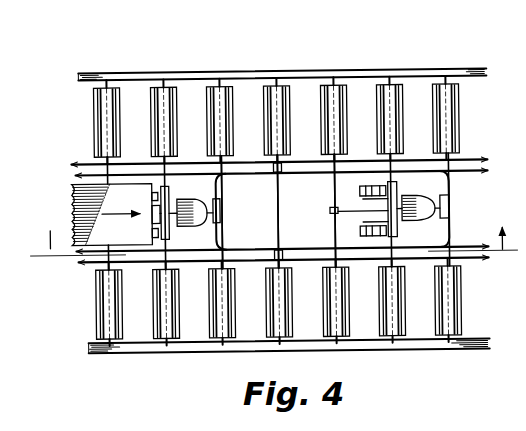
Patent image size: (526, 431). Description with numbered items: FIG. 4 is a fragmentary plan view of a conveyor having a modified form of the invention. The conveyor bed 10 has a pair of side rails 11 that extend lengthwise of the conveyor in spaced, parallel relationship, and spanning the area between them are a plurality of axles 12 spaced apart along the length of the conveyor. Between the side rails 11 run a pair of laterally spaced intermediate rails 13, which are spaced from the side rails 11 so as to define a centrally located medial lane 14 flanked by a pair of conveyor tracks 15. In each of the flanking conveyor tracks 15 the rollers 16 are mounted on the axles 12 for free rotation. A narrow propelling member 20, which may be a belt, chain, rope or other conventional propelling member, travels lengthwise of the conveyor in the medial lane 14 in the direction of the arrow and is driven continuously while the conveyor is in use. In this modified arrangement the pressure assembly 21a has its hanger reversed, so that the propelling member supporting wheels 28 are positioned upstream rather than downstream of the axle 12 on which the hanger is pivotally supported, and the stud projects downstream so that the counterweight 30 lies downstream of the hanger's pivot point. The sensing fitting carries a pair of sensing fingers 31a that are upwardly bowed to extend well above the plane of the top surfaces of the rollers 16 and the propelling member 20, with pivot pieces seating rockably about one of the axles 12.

The conveyor bed 10 is at (264, 220).
The side rails 11 is at (92, 75).
The axles 12 is at (277, 212).
The intermediate rails 13 is at (83, 162).
The medial lane 14 is at (230, 203).
The conveyor tracks 15 is at (92, 93).
The rollers 16 is at (463, 315).
The propelling member 20 is at (72, 222).
The pressure assembly 21a is at (257, 265).
The propelling member supporting wheels 28 is at (360, 230).
The counterweight 30 is at (205, 208).
The sensing fingers 31a is at (370, 265).